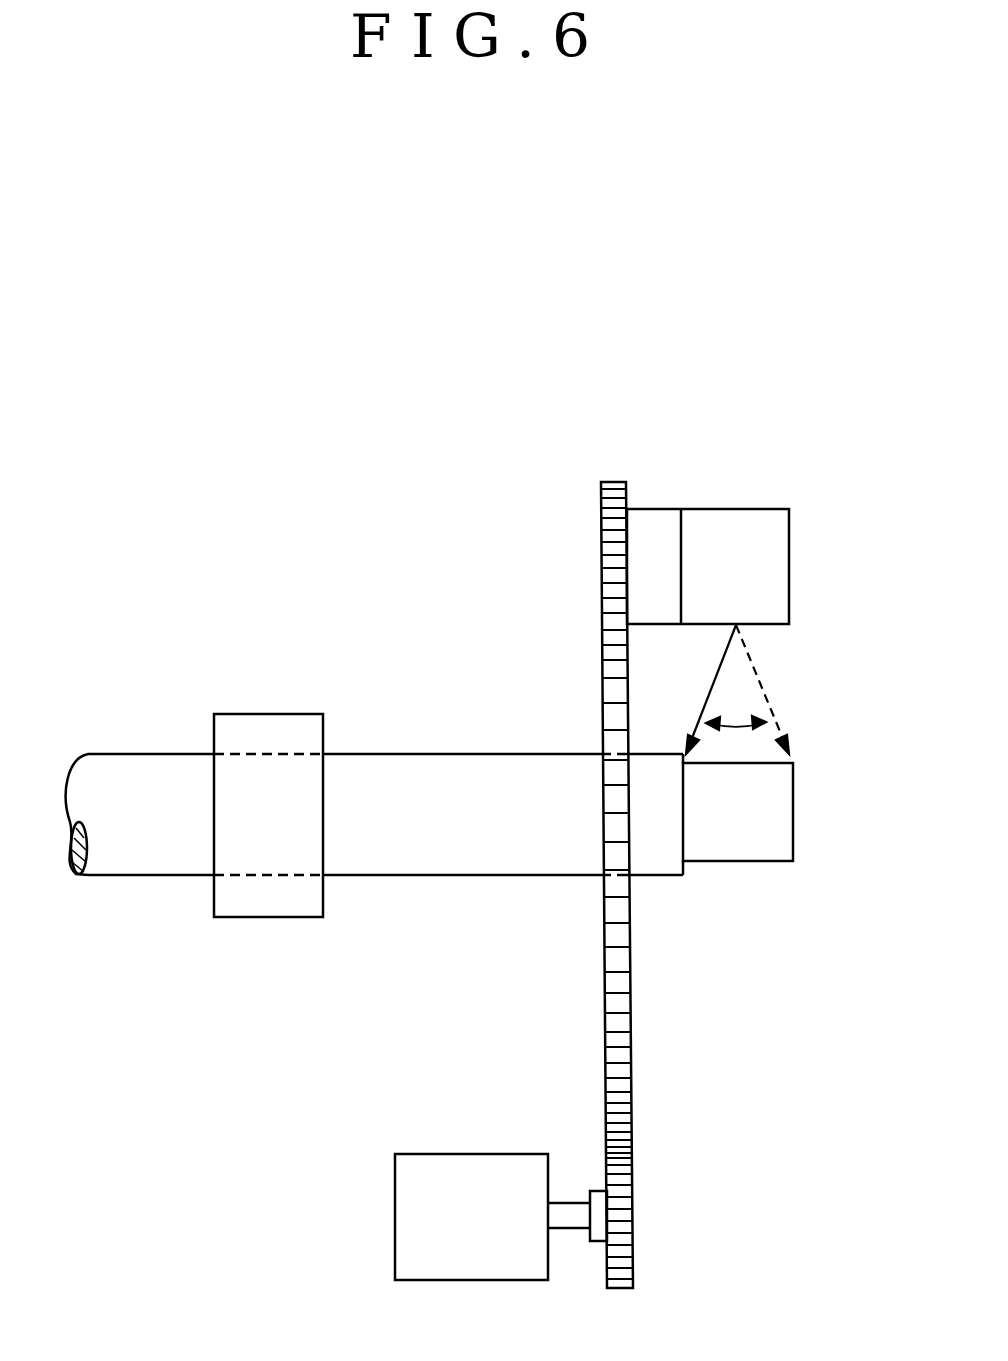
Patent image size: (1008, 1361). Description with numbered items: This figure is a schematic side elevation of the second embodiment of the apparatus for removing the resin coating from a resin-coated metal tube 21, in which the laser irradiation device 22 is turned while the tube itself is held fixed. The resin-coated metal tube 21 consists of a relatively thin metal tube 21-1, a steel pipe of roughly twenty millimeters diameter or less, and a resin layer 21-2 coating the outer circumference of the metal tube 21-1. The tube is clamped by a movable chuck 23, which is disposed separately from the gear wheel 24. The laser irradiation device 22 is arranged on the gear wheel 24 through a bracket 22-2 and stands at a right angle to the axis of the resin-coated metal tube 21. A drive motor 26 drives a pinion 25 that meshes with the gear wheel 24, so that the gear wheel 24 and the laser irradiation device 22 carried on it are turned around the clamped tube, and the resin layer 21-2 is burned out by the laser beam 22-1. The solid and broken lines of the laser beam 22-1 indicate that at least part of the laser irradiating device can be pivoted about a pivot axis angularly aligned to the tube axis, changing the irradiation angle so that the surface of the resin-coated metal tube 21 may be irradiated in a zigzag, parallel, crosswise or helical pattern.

The resin-coated metal tube 21 is at (398, 752).
The metal tube 21-1 is at (765, 845).
The resin layer 21-2 is at (500, 777).
The laser irradiation device 22 is at (763, 540).
The laser beam 22-1 is at (743, 640).
The bracket 22-2 is at (650, 520).
The chuck 23 is at (276, 714).
The gear wheel 24 is at (601, 548).
The pinion 25 is at (633, 1195).
The drive motor 26 is at (432, 1154).